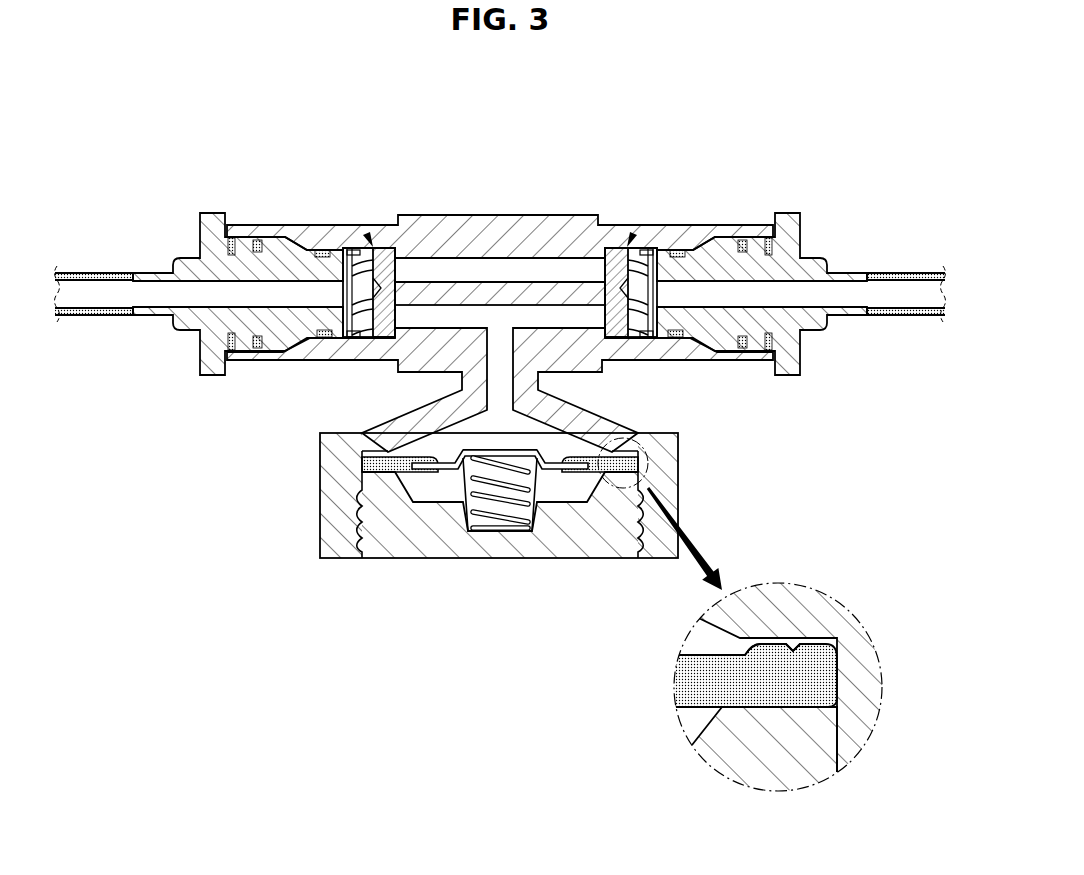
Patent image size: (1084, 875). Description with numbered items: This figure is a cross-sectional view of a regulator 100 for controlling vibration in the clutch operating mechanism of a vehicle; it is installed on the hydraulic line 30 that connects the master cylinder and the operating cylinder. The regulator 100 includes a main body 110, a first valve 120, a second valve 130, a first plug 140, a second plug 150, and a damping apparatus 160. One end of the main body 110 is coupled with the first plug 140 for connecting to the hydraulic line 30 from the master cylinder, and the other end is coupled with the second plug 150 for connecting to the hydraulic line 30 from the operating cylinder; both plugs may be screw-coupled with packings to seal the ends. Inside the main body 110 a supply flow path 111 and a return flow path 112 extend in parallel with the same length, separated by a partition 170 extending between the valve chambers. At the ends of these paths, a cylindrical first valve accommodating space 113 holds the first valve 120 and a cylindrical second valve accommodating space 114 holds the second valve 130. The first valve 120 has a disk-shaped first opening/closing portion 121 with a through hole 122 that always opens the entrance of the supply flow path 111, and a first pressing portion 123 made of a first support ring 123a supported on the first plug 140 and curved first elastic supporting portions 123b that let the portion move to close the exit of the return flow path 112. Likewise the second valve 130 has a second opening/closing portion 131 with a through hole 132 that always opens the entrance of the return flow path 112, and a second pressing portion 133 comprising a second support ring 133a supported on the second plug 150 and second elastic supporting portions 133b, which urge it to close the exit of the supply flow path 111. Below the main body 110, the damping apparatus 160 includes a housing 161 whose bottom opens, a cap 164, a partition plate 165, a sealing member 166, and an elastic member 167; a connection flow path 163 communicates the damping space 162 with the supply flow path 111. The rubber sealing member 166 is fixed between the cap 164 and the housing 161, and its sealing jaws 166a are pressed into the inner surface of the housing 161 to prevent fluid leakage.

The hydraulic line 30 is at (84, 272).
The regulator 100 is at (495, 279).
The main body 110 is at (500, 288).
The supply flow path 111 is at (398, 340).
The return flow path 112 is at (520, 265).
The first valve accommodating space 113 is at (338, 248).
The second valve accommodating space 114 is at (648, 258).
The first valve 120 is at (259, 308).
The first opening/closing portion 121 is at (377, 247).
The through hole 122 is at (373, 322).
The first pressing portion 123 is at (248, 364).
The first support ring 123a is at (315, 330).
The first elastic supporting portions 123b is at (358, 335).
The second valve 130 is at (696, 305).
The second opening/closing portion 131 is at (612, 338).
The through hole 132 is at (590, 262).
The second pressing portion 133 is at (709, 361).
The second support ring 133a is at (690, 337).
The second elastic supporting portions 133b is at (636, 332).
The first plug 140 is at (272, 255).
The second plug 150 is at (752, 262).
The damping apparatus 160 is at (579, 639).
The housing 161 is at (335, 487).
The damping space 162 is at (545, 468).
The connection flow path 163 is at (490, 298).
The cap 164 is at (395, 550).
The partition plate 165 is at (465, 480).
The sealing member 166 is at (605, 593).
The sealing jaws 166a is at (812, 645).
The elastic member 167 is at (503, 530).
The partition 170 is at (530, 450).